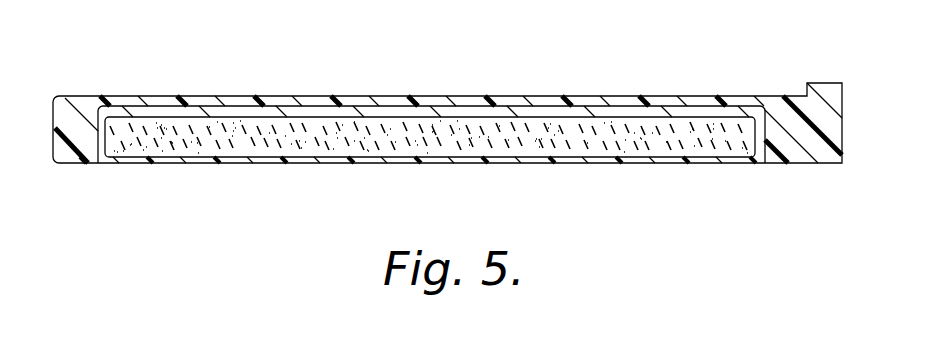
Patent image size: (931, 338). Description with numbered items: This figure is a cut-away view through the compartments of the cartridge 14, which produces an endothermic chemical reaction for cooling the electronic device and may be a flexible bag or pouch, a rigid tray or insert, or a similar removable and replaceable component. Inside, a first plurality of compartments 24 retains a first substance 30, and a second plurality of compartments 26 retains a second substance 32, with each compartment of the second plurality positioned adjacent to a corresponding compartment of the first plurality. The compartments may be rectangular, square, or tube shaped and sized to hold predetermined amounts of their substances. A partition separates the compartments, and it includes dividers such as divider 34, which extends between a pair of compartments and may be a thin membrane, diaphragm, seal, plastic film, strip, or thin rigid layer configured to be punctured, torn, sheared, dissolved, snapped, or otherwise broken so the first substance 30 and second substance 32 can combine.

The cartridge 14 is at (838, 185).
The first plurality of compartments 24 is at (332, 140).
The second plurality of compartments 26 is at (553, 137).
The first substance 30 is at (240, 130).
The second substance 32 is at (652, 127).
The divider 34 is at (428, 123).